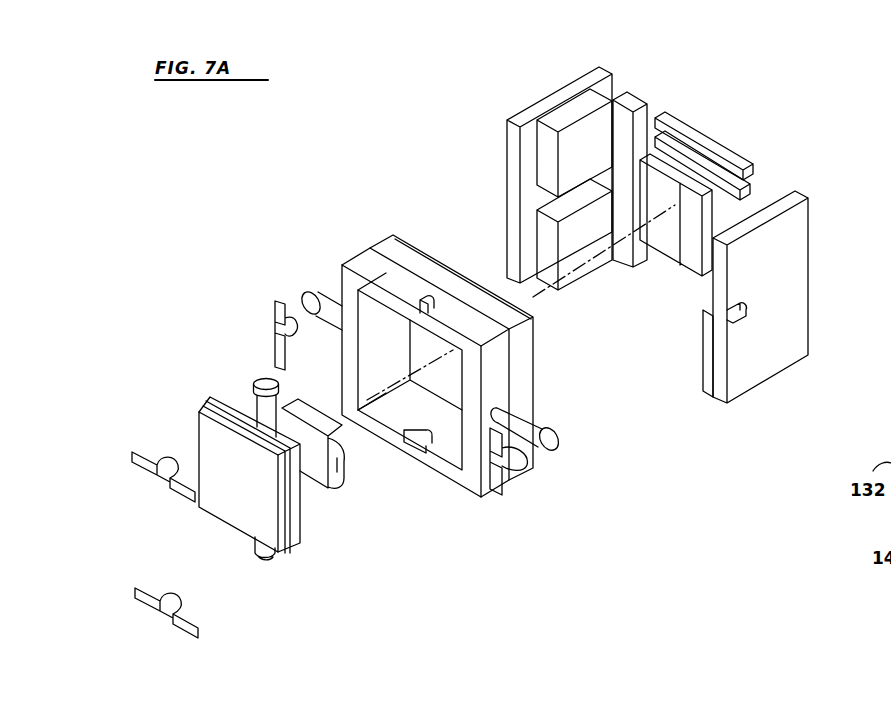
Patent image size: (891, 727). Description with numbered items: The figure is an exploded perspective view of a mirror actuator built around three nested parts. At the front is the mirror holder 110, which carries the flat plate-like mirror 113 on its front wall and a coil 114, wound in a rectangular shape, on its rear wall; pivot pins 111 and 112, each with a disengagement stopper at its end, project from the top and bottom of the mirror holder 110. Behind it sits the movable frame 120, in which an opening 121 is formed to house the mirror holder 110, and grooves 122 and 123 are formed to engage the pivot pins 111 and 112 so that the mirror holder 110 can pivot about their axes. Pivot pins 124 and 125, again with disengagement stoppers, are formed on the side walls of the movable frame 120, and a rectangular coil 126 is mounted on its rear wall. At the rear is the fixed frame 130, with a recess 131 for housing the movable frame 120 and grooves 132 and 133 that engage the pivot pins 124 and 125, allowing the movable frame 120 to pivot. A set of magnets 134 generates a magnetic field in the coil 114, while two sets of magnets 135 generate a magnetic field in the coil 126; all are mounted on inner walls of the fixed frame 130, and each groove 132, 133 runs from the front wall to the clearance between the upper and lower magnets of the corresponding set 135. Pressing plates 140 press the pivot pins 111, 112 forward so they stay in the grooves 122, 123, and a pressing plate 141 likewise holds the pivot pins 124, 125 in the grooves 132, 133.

The mirror holder 110 is at (275, 500).
The pivot pin 111 is at (260, 379).
The pivot pin 112 is at (268, 558).
The mirror 113 is at (227, 493).
The coil 114 is at (298, 406).
The movable frame 120 is at (467, 381).
The opening 121 is at (380, 320).
The groove 122 is at (428, 290).
The groove 123 is at (413, 452).
The pivot pin 124 is at (320, 275).
The pivot pin 125 is at (558, 448).
The coil 126 is at (522, 382).
The fixed frame 130 is at (642, 242).
The recess 131 is at (635, 242).
The groove 132 is at (528, 195).
The groove 133 is at (737, 310).
The set of magnets 134 is at (670, 158).
The sets of magnets 135 is at (575, 207).
The pressing plate 140 is at (160, 468).
The pressing plate 141 is at (277, 300).